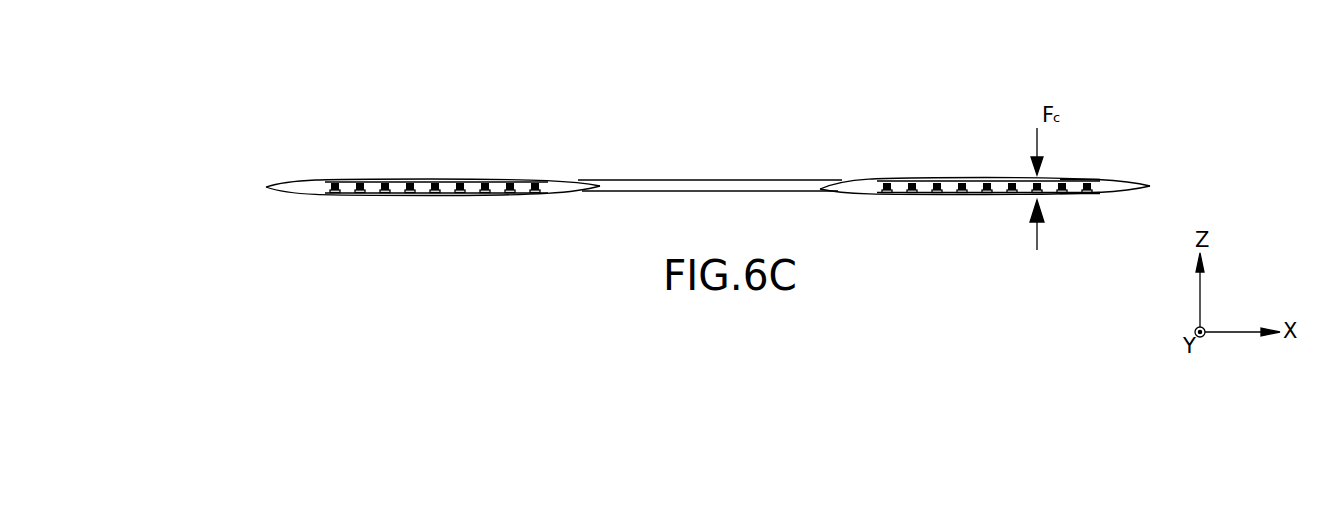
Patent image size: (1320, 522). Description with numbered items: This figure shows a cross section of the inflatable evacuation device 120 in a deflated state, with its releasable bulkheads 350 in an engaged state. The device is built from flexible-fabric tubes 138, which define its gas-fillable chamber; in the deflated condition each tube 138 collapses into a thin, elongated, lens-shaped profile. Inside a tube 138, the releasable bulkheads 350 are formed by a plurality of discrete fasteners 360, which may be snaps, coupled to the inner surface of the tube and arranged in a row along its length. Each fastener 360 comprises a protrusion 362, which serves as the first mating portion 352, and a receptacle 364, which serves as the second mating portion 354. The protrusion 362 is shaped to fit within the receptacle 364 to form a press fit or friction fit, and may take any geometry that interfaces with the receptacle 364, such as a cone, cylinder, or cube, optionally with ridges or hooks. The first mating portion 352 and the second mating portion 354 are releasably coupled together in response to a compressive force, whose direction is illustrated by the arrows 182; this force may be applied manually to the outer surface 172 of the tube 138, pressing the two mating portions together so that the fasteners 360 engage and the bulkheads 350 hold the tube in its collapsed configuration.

The inflatable evacuation device 120 is at (243, 137).
The tubes 138 is at (562, 180).
The outer surface 172 is at (1000, 177).
The arrows 182 is at (1037, 240).
The releasable bulkheads 350 is at (1168, 71).
The first mating portion 352 is at (1087, 177).
The second mating portion 354 is at (1097, 185).
The fastener 360 is at (915, 178).
The protrusion 362 is at (965, 178).
The receptacle 364 is at (932, 195).